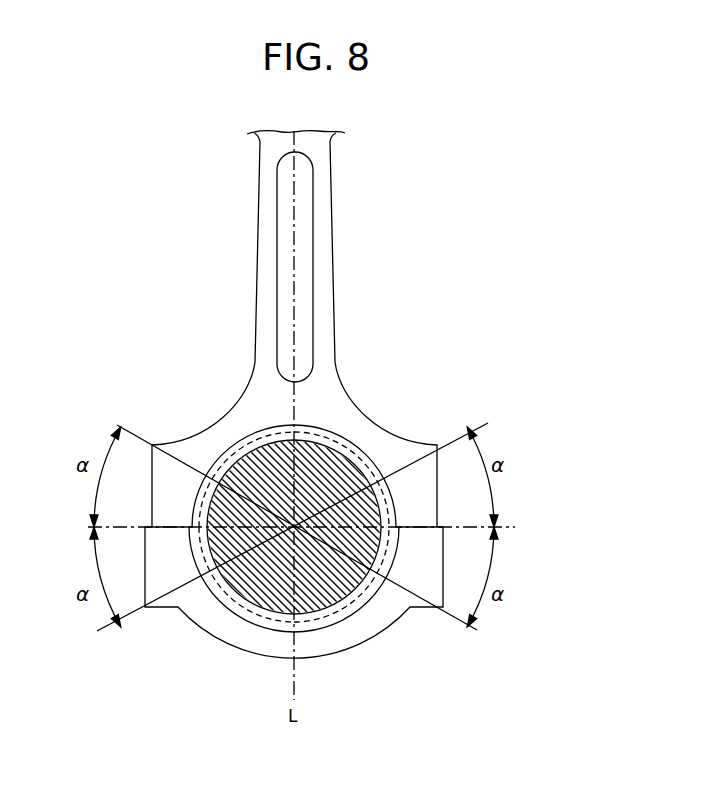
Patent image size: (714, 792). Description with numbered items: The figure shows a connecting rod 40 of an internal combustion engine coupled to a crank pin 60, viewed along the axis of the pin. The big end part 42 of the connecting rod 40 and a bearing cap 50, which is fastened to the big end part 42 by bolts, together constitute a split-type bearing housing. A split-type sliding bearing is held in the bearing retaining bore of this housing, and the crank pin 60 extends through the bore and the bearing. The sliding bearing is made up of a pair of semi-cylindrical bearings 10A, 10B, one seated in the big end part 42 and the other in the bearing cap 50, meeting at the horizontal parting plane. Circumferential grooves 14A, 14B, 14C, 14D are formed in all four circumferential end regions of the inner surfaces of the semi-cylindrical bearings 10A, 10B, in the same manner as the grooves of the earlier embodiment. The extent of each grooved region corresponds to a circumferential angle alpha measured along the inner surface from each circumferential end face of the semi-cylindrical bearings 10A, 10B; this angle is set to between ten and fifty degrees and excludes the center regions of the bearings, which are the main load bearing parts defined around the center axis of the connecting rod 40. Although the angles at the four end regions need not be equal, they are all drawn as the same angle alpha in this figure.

The connecting rod 40 is at (377, 281).
The big end part 42 is at (393, 444).
The semi-cylindrical bearing 10A is at (230, 450).
The semi-cylindrical bearing 10B is at (372, 632).
The bearing cap 50 is at (324, 648).
The crank pin 60 is at (263, 584).
The circumferential grooves 14A is at (197, 495).
The circumferential grooves 14B is at (391, 495).
The circumferential grooves 14C is at (193, 556).
The circumferential grooves 14D is at (394, 555).